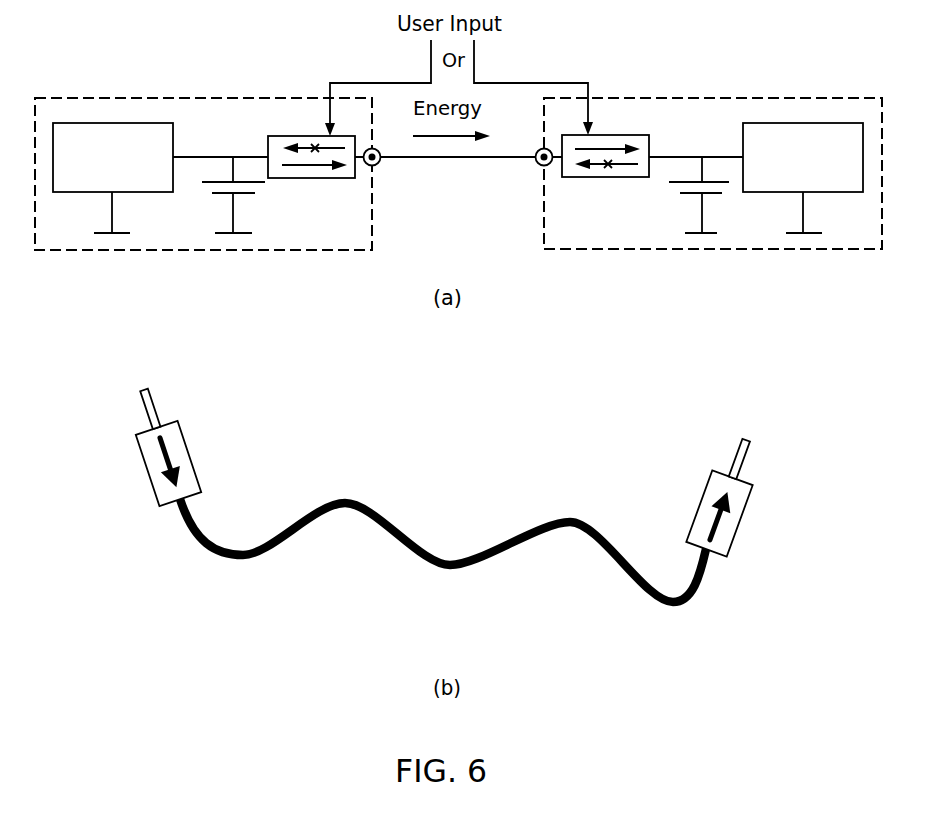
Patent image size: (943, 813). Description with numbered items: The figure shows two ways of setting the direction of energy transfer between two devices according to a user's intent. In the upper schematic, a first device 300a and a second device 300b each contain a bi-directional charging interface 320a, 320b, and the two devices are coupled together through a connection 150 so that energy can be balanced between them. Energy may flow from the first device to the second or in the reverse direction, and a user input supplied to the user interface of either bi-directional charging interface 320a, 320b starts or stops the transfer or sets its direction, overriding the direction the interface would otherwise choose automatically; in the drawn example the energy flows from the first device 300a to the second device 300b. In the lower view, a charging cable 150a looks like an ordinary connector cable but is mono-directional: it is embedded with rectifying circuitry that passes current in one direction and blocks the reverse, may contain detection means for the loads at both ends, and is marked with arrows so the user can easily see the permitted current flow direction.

The first device 300a is at (203, 153).
The second device 300b is at (713, 153).
The bi-directional charging interface 320a is at (297, 178).
The bi-directional charging interface 320b is at (621, 177).
The cable 150 is at (484, 158).
The charging cable 150a is at (461, 475).